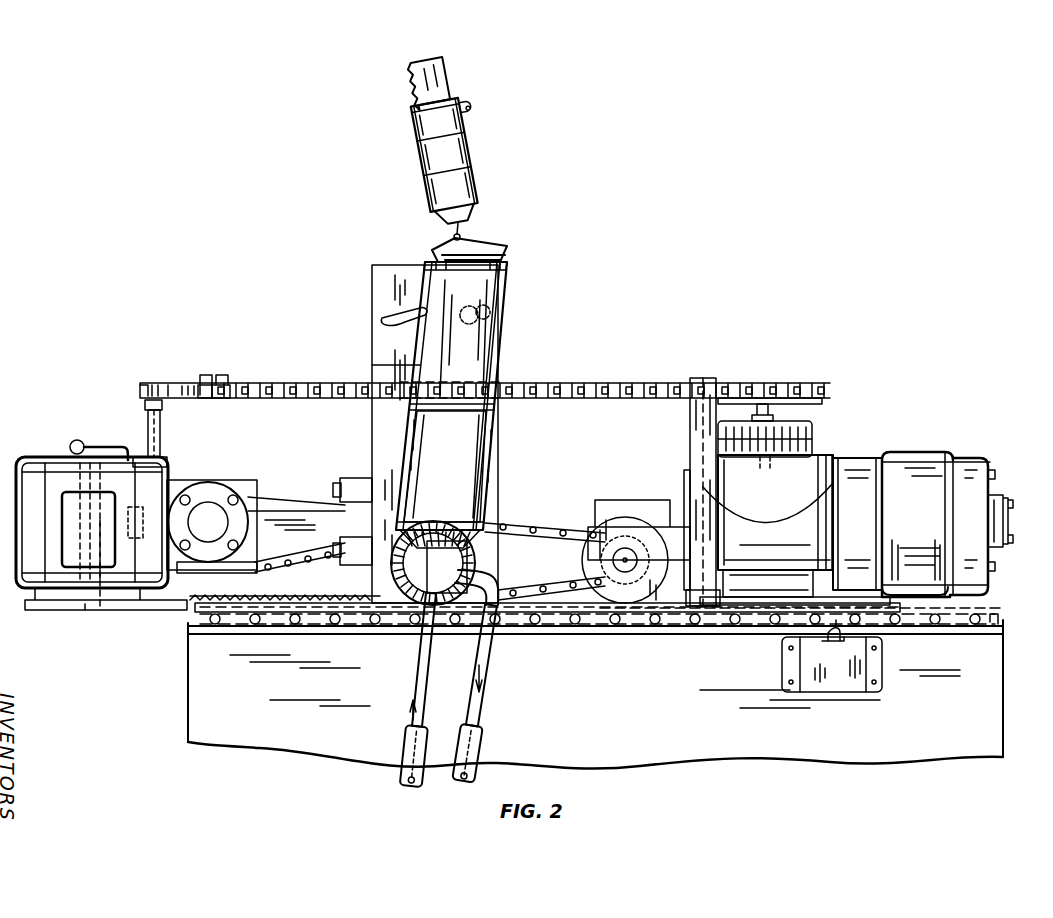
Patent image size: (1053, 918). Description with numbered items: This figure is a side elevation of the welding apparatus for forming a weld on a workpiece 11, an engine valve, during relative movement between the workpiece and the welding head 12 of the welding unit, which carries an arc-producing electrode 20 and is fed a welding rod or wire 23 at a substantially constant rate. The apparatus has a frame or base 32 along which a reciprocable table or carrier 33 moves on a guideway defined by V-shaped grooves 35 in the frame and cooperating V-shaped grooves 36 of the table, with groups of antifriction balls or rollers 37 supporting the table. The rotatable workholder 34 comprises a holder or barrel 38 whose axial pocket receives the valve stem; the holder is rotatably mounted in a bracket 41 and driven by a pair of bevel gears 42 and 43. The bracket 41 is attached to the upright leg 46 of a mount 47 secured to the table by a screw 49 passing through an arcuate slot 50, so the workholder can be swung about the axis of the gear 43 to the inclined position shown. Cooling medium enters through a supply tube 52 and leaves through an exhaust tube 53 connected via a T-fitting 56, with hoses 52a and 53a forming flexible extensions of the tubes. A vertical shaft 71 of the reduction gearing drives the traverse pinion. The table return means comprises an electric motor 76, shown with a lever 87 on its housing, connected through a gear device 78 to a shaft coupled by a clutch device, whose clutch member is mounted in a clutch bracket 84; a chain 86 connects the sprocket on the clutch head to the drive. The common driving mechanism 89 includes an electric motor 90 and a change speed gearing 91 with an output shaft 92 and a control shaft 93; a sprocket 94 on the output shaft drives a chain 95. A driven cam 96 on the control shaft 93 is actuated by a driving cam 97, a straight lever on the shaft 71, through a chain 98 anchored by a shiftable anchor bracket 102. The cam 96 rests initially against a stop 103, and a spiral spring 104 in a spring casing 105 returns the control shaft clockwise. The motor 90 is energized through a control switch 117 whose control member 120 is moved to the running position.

The workpiece 11 is at (497, 243).
The welding head 12 is at (480, 165).
The electrode 20 is at (466, 232).
The welding rod or wire 23 is at (450, 240).
The frame or base 32 is at (998, 700).
The table or carrier 33 is at (681, 613).
The workholder 34 is at (515, 283).
The V-shaped grooves 35 is at (942, 622).
The V-shaped grooves 36 is at (853, 605).
The antifriction balls or rollers 37 is at (641, 627).
The holder or barrel 38 is at (497, 446).
The bracket 41 is at (410, 437).
The bevel gear 42 is at (470, 509).
The bevel gear 43 is at (400, 548).
The upright leg 46 is at (380, 350).
The mount 47 is at (372, 368).
The screw 49 is at (490, 306).
The arcuate slot 50 is at (383, 318).
The supply tube 52 is at (426, 672).
The hose 52a is at (410, 738).
The exhaust tube 53 is at (478, 676).
The hose 53a is at (485, 746).
The T-fitting 56 is at (447, 567).
The vertical shaft 71 is at (160, 443).
The electric motor 76 is at (55, 458).
The gear device 78 is at (226, 497).
The clutch bracket 84 is at (313, 505).
The chain 86 is at (293, 566).
The lever 87 is at (110, 446).
The common driving mechanism 89 is at (862, 447).
The electric motor 90 is at (922, 456).
The change speed gearing 91 is at (830, 540).
The output shaft 92 is at (623, 560).
The control shaft 93 is at (773, 412).
The sprocket 94 is at (604, 549).
The chain 95 is at (568, 530).
The driven cam 96 is at (805, 398).
The driving cam 97 is at (180, 381).
The chain 98 is at (583, 381).
The anchor bracket 102 is at (230, 378).
The stop 103 is at (695, 418).
The spiral spring 104 is at (696, 446).
The spring casing 105 is at (816, 445).
The control switch 117 is at (858, 674).
The control member 120 is at (846, 637).